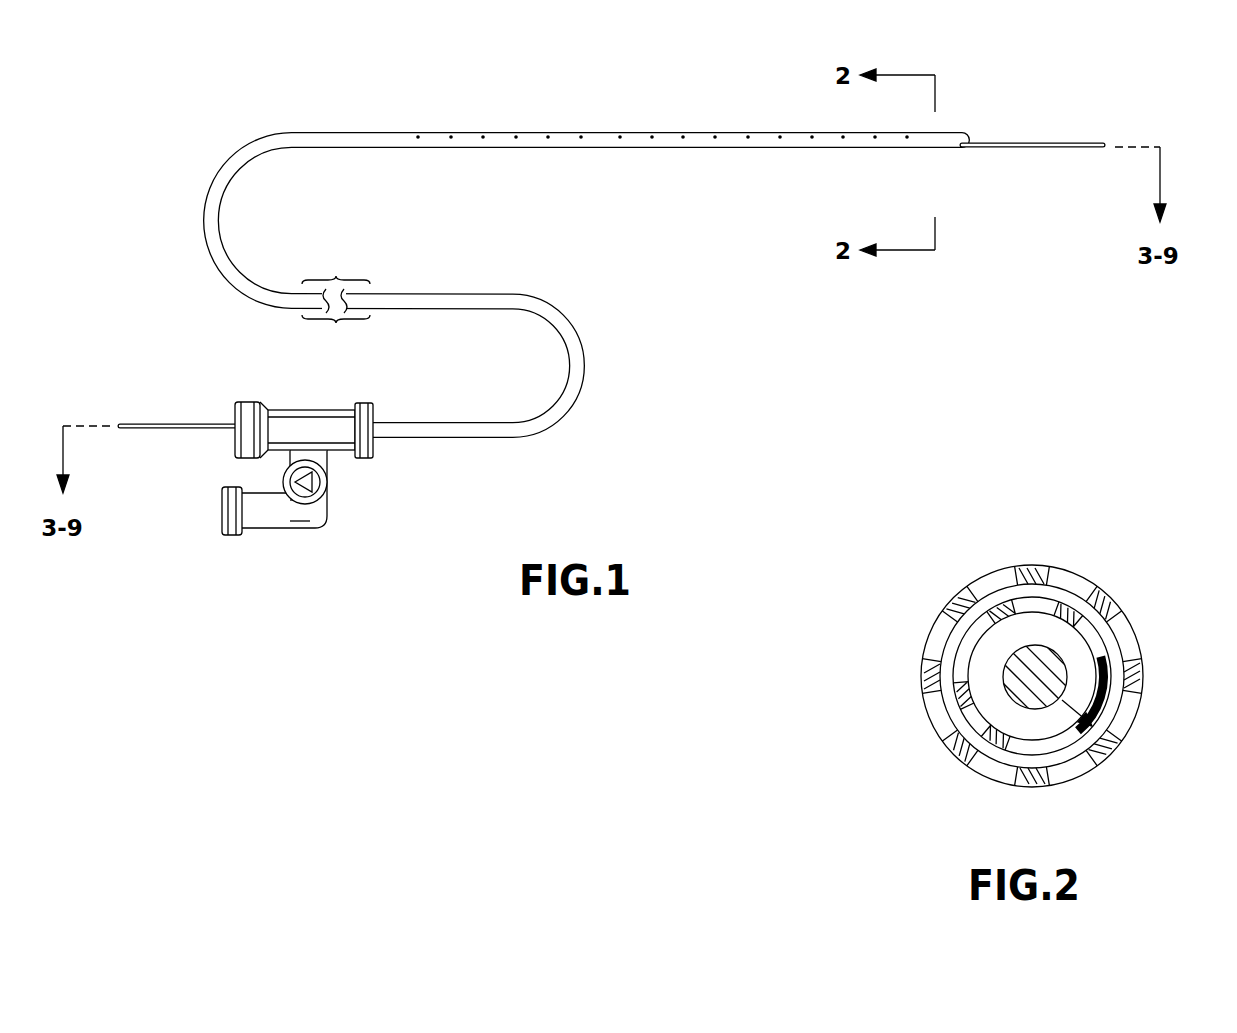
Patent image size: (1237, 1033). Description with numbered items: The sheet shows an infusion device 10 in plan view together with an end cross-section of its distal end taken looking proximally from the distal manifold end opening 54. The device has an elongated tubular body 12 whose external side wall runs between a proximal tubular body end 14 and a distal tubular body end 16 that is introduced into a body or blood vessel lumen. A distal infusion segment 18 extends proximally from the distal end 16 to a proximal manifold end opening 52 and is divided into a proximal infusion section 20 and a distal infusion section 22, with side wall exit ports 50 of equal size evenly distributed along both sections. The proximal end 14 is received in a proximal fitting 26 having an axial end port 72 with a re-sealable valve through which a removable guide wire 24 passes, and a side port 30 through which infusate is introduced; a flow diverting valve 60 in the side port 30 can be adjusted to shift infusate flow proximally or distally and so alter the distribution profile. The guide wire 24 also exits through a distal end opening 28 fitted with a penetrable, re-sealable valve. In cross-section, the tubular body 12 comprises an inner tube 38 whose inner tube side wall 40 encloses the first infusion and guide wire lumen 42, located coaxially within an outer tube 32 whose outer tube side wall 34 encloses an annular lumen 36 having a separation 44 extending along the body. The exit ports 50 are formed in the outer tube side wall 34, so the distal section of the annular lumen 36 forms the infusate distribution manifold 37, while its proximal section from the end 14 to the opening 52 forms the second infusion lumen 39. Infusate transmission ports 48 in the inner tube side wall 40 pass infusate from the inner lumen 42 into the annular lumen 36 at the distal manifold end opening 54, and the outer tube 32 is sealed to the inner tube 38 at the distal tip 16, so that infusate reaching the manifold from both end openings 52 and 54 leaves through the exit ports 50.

In FIG. 1, the infusion device 10 is at (364, 118).
In FIG. 1, the elongated tubular body 12 is at (232, 287).
In FIG. 1, the proximal tubular body end 14 is at (423, 438).
In FIG. 1, the distal tubular body end 16 is at (940, 146).
In FIG. 1, the distal infusion segment 18 is at (428, 200).
In FIG. 2, the distal infusion segment 18 is at (1152, 583).
In FIG. 1, the proximal infusion section 20 is at (697, 157).
In FIG. 1, the distal infusion section 22 is at (710, 173).
In FIG. 1, the guide wire 24 is at (1055, 147).
In FIG. 2, the guide wire 24 is at (1003, 672).
In FIG. 1, the proximal fitting 26 is at (308, 410).
In FIG. 1, the distal end opening 28 is at (966, 142).
In FIG. 1, the side port 30 is at (230, 535).
In FIG. 2, the outer tube 32 is at (1128, 632).
In FIG. 2, the outer tube side wall 34 is at (963, 600).
In FIG. 2, the annular lumen 36 is at (1005, 622).
In FIG. 2, the infusate distribution manifold 37 is at (1005, 622).
In FIG. 2, the second infusion lumen 39 is at (1000, 597).
In FIG. 2, the inner tube 38 is at (1100, 652).
In FIG. 2, the inner tube side wall 40 is at (975, 628).
In FIG. 2, the first infusion and guide wire lumen 42 is at (1030, 628).
In FIG. 2, the separation 44 is at (1100, 758).
In FIG. 2, the infusate transmission ports 48 is at (1085, 625).
In FIG. 1, the side wall exit ports 50 is at (748, 138).
In FIG. 2, the side wall exit ports 50 is at (1033, 572).
In FIG. 1, the proximal manifold end opening 52 is at (395, 156).
In FIG. 1, the distal manifold end opening 54 is at (954, 122).
In FIG. 1, the flow diverting valve 60 is at (327, 484).
In FIG. 1, the axial end port 72 is at (250, 400).